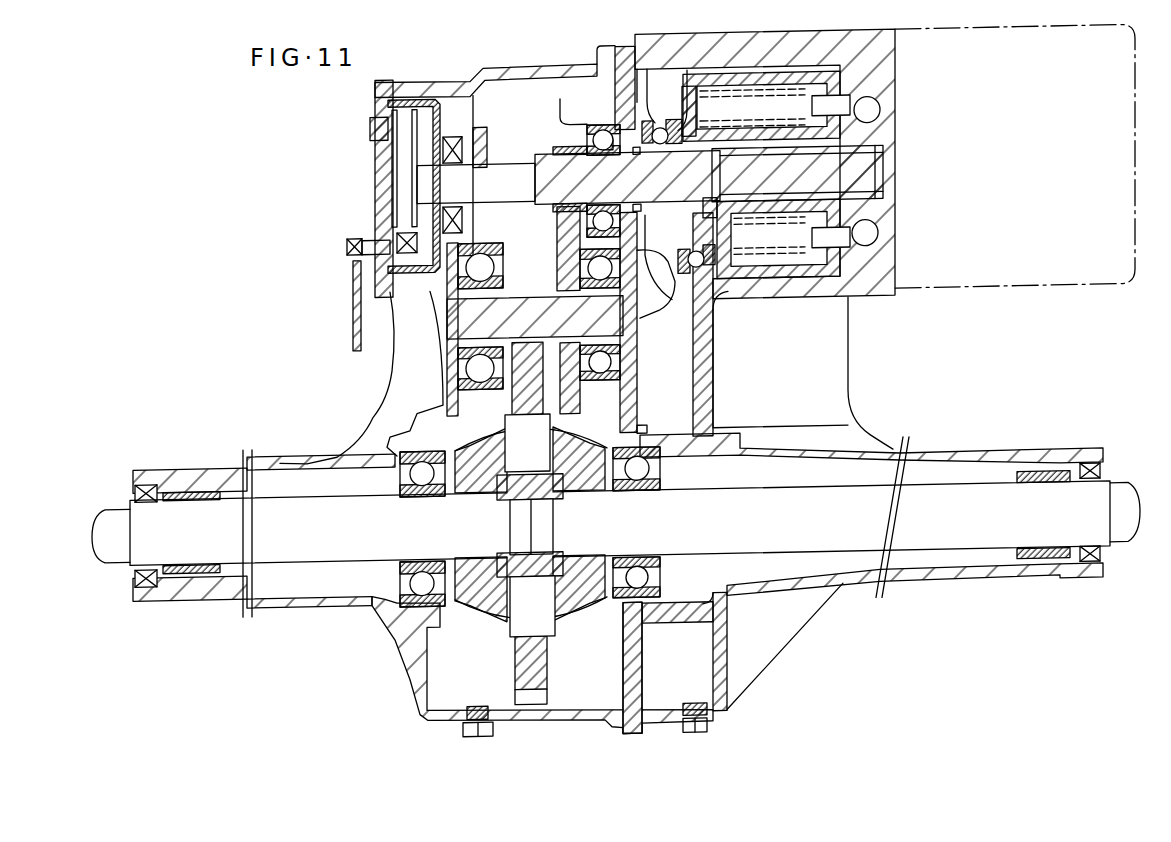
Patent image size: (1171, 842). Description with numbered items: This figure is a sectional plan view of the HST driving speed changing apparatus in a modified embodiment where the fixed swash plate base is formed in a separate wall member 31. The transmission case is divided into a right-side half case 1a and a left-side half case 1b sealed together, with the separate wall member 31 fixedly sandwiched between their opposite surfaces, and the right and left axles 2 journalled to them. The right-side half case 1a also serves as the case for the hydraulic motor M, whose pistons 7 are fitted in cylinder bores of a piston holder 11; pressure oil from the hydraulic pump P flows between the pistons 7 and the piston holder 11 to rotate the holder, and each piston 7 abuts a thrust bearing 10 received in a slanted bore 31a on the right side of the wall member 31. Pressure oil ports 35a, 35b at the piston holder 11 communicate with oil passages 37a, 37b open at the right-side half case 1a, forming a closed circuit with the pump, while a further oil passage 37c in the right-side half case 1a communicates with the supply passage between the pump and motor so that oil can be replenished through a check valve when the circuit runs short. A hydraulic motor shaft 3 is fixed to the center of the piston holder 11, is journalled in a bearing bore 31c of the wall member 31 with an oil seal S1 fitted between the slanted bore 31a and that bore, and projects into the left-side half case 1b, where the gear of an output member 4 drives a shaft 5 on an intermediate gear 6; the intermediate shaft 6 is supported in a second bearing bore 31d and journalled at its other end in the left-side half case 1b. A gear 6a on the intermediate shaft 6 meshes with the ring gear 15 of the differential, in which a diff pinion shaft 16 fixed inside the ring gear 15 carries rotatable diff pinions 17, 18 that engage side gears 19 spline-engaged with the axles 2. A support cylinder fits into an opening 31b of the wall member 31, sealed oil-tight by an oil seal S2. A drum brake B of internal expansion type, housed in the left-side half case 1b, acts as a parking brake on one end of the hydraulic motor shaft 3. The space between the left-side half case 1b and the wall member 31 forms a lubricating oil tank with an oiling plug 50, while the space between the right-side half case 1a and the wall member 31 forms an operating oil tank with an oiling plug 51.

The right-side half case 1a is at (850, 355).
The left-side half case 1b is at (388, 377).
The axles 2 is at (361, 549).
The hydraulic motor shaft 3 is at (596, 196).
The output member 4 is at (568, 138).
The shaft 5 is at (557, 235).
The intermediate shaft 6 is at (557, 336).
The gear 6a is at (521, 281).
The pistons 7 is at (708, 206).
The thrust bearing 10 is at (693, 252).
The piston holder 11 is at (777, 277).
The ring gear 15 is at (553, 674).
The diff pinion shaft 16 is at (534, 622).
The diff pinion 17 is at (557, 417).
The diff pinion 18 is at (497, 621).
The side gears 19 is at (578, 527).
The separate wall member 31 is at (657, 654).
The slanted bore 31a is at (652, 108).
The opening 31b is at (648, 431).
The bearing bore 31c is at (586, 118).
The bearing bore 31d is at (637, 304).
The pressure oil port 35a is at (835, 101).
The pressure oil port 35b is at (850, 235).
The oil passage 37a is at (878, 115).
The oil passage 37b is at (878, 239).
The oil passage 37c is at (887, 182).
The oiling plug 50 is at (463, 726).
The oiling plug 51 is at (707, 727).
The drum brake B is at (344, 159).
The hydraulic motor M is at (793, 303).
The hydraulic pump P is at (1030, 189).
The oil seal S1 is at (635, 168).
The oil seal S2 is at (643, 434).